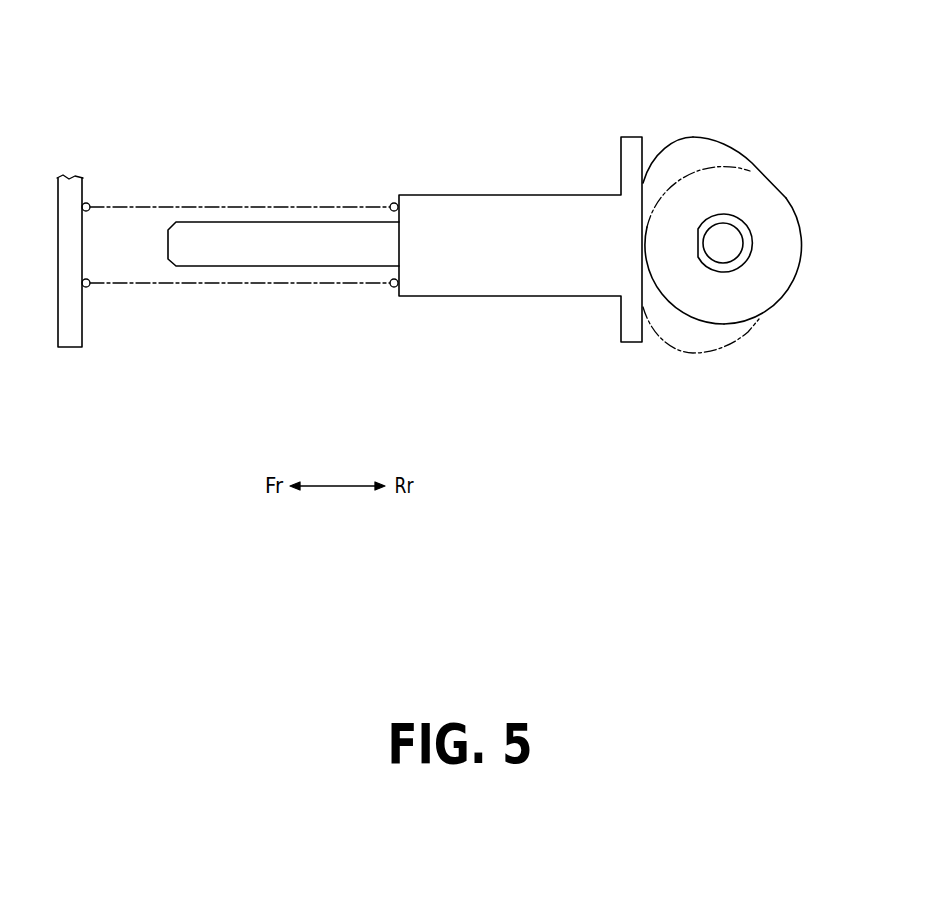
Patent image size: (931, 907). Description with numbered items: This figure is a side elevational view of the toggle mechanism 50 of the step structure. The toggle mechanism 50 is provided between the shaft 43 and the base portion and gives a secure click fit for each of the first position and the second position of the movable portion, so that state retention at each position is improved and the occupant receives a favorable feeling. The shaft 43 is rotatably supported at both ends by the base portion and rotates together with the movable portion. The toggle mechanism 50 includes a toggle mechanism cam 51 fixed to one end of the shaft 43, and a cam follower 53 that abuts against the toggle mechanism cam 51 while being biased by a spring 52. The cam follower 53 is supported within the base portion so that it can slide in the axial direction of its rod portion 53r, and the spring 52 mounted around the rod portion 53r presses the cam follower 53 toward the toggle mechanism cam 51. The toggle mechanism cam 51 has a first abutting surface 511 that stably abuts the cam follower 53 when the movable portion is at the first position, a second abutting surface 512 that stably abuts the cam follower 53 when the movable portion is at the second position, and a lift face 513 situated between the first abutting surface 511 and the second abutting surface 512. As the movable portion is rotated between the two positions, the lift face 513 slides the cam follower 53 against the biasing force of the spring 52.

The toggle mechanism 50 is at (580, 91).
The toggle mechanism cam 51 is at (708, 160).
The first abutting surface 511 is at (643, 223).
The second abutting surface 512 is at (750, 162).
The lift face 513 is at (675, 138).
The spring 52 is at (307, 207).
The cam follower 53 is at (476, 222).
The rod portion 53r is at (233, 247).
The shaft 43 is at (728, 248).